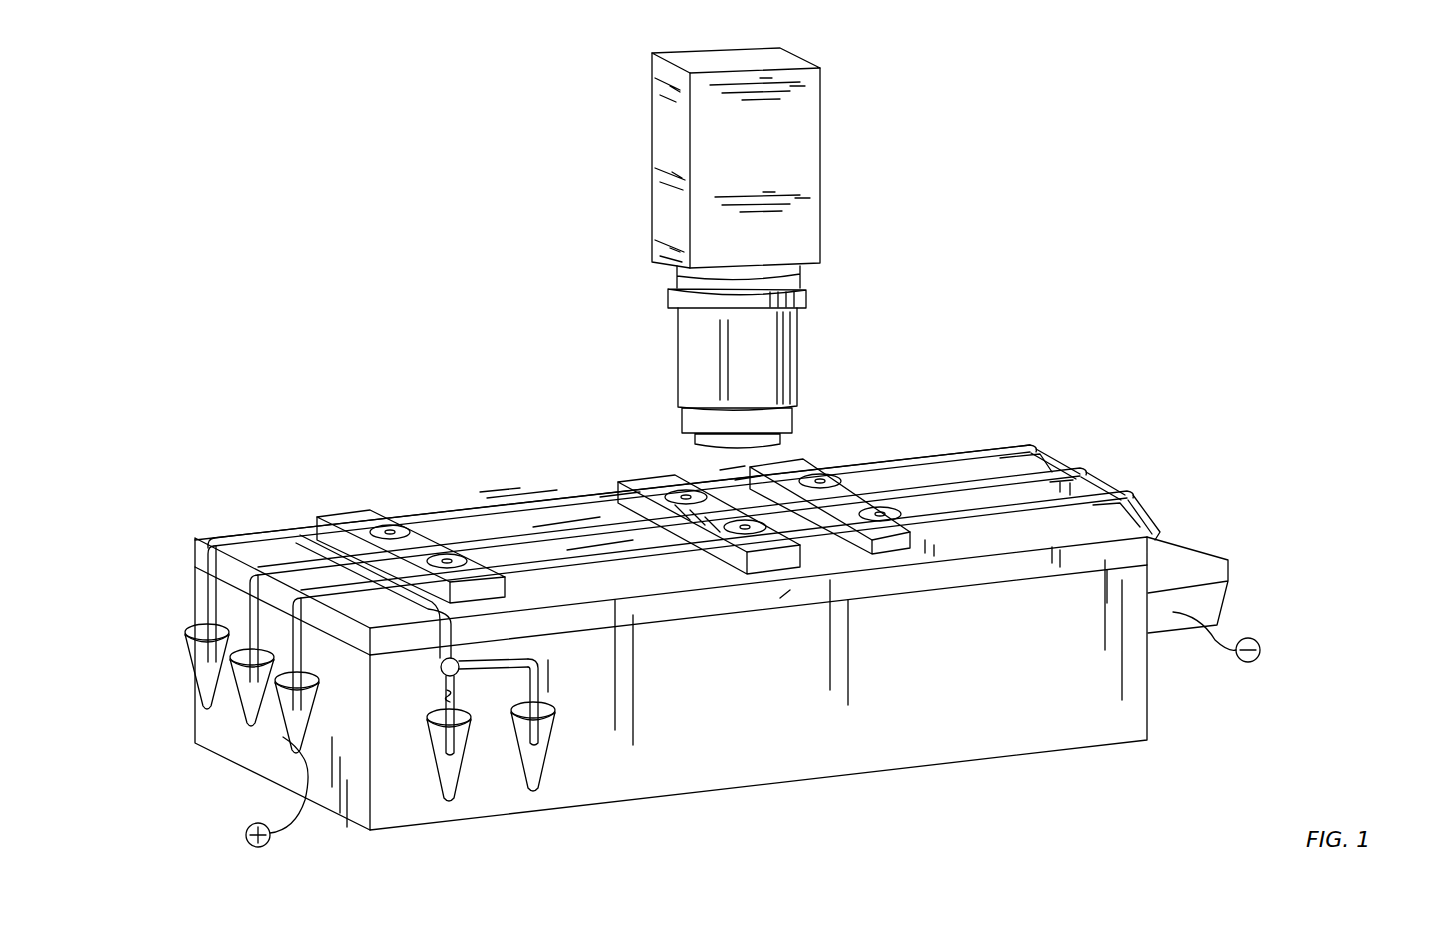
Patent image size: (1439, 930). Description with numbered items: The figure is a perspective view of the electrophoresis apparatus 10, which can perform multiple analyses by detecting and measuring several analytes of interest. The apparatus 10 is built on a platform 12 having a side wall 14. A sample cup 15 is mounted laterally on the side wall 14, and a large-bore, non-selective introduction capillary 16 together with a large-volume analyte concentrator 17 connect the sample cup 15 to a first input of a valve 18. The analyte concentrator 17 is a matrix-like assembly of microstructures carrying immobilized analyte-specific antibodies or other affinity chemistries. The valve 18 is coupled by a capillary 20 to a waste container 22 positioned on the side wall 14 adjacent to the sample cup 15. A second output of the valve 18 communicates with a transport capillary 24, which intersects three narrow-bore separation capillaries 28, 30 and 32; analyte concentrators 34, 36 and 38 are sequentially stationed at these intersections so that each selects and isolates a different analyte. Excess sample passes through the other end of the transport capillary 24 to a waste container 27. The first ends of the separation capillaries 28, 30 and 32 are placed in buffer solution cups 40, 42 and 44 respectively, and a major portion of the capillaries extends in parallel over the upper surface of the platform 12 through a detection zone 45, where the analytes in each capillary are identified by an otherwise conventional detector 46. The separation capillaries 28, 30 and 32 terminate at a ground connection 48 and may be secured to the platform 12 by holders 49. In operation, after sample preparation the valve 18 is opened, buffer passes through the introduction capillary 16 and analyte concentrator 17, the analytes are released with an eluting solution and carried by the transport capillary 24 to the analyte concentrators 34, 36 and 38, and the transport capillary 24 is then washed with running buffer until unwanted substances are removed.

The electrophoresis apparatus 10 is at (480, 472).
The platform 12 is at (985, 567).
The side wall 14 is at (690, 778).
The sample cup 15 is at (458, 775).
The introduction capillary 16 is at (437, 772).
The analyte concentrator 17 is at (440, 697).
The valve 18 is at (472, 640).
The capillary 20 is at (542, 652).
The waste container 22 is at (553, 745).
The transport capillary 24 is at (257, 527).
The waste container 27 is at (228, 540).
The separation capillary 28 is at (515, 515).
The separation capillary 30 is at (600, 545).
The separation capillary 32 is at (597, 557).
The analyte concentrator 34 is at (387, 578).
The analyte concentrator 36 is at (350, 580).
The analyte concentrator 38 is at (288, 532).
The buffer solution cup 40 is at (295, 748).
The buffer solution cup 42 is at (248, 725).
The buffer solution cup 44 is at (203, 694).
The detection zone 45 is at (722, 500).
The detector 46 is at (668, 347).
The ground connection 48 is at (1180, 553).
The holders 49 is at (820, 474).